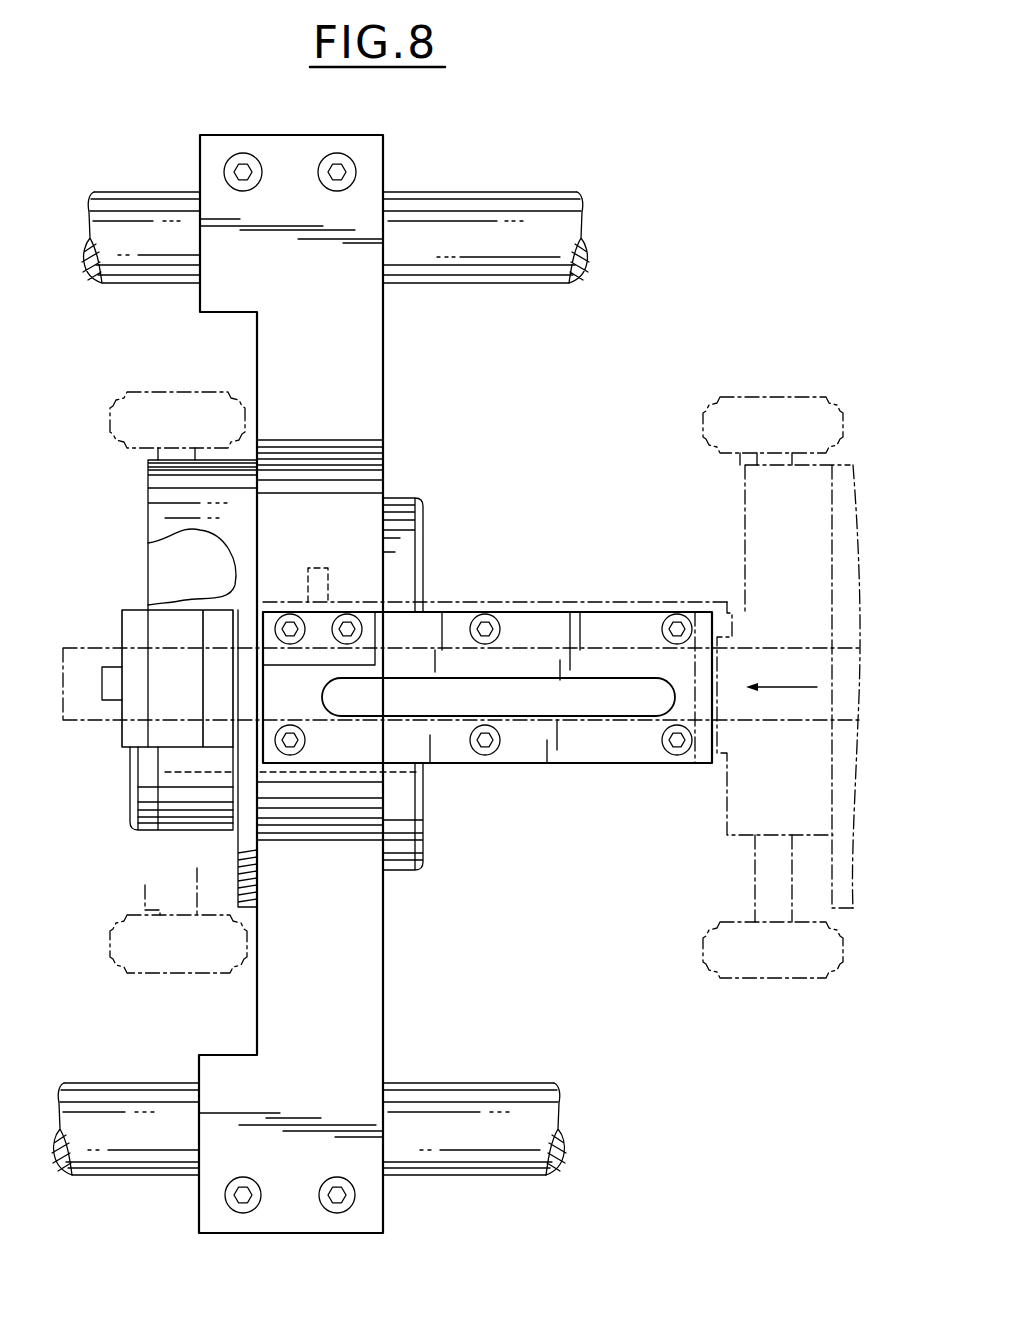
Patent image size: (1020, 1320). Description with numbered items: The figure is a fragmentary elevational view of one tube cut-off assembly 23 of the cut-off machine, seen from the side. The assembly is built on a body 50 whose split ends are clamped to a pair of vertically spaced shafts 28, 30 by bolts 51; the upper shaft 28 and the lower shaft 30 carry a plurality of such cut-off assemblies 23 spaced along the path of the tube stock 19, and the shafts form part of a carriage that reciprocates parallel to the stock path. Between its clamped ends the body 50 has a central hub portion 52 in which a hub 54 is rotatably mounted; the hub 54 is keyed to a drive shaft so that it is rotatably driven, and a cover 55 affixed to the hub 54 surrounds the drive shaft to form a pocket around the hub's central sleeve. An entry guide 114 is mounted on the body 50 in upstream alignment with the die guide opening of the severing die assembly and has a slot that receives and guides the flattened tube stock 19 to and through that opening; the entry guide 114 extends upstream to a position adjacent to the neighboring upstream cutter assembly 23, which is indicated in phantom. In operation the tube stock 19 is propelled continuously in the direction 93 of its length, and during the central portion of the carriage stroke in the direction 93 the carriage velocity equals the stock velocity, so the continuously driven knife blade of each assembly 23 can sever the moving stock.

The tube stock 19 is at (810, 647).
The tube cut-off assembly 23 is at (781, 390).
The shaft 28 is at (511, 203).
The shaft 30 is at (484, 1093).
The body 50 is at (395, 433).
The bolts 51 is at (325, 157).
The central hub portion 52 is at (368, 488).
The hub 54 is at (160, 508).
The cover 55 is at (150, 822).
The direction of stock motion 93 is at (797, 689).
The entry guide 114 is at (602, 620).